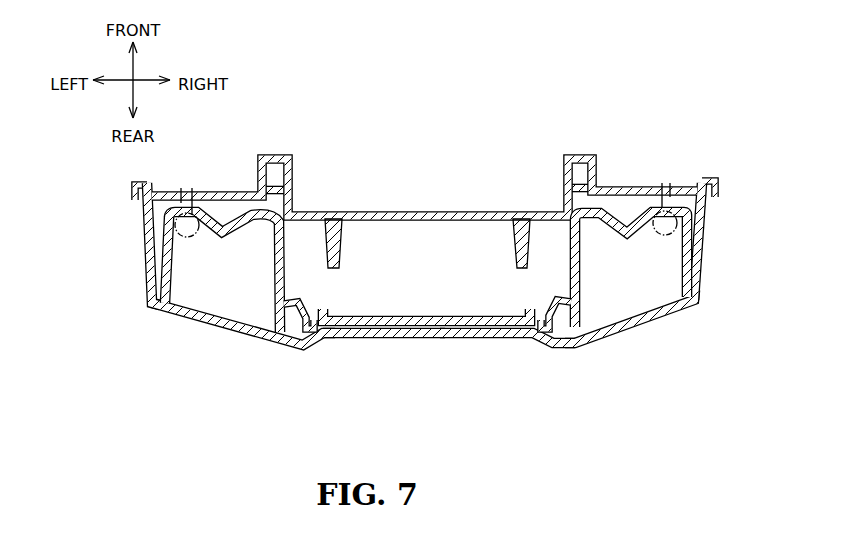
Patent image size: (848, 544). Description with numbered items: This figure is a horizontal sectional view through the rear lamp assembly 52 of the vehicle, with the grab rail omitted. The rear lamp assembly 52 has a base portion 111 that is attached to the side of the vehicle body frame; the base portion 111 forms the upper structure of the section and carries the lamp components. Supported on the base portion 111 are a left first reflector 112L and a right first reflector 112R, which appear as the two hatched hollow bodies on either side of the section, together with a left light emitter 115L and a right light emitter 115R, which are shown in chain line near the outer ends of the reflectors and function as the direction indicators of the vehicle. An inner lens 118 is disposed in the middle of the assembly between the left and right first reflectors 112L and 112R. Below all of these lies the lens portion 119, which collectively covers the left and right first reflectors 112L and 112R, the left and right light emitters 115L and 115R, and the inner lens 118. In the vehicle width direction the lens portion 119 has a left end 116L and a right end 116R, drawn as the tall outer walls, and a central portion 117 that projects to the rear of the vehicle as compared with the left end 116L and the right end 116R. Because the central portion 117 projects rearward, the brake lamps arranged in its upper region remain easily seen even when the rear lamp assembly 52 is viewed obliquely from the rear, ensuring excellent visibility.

The rear lamp assembly 52 is at (629, 333).
The base portion 111 is at (422, 213).
The left first reflector 112L is at (253, 223).
The right first reflector 112R is at (592, 224).
The left light emitter 115L is at (186, 237).
The right light emitter 115R is at (665, 235).
The left end 116L is at (148, 305).
The right end 116R is at (701, 303).
The central portion 117 is at (373, 338).
The inner lens 118 is at (427, 327).
The lens portion 119 is at (500, 338).